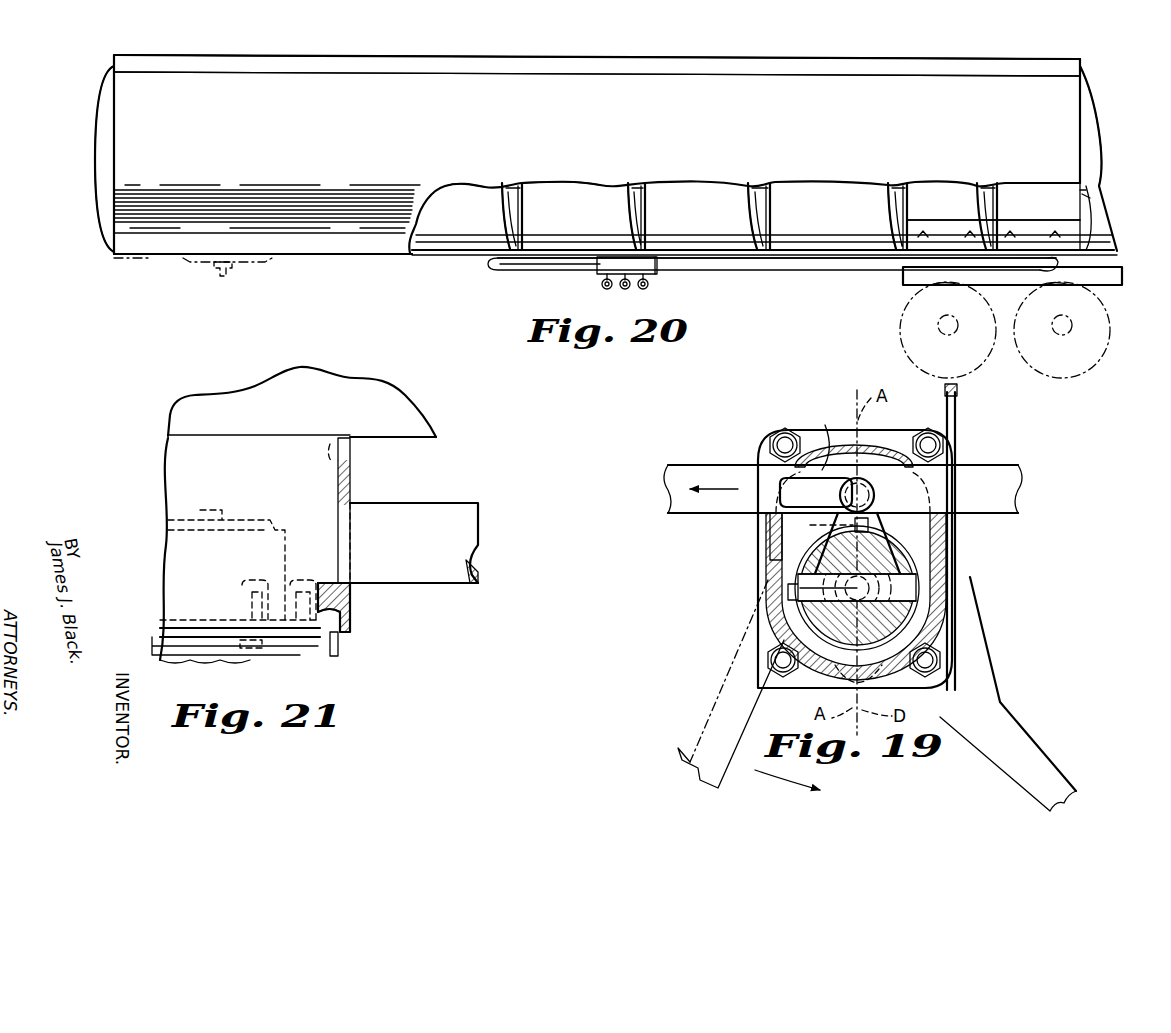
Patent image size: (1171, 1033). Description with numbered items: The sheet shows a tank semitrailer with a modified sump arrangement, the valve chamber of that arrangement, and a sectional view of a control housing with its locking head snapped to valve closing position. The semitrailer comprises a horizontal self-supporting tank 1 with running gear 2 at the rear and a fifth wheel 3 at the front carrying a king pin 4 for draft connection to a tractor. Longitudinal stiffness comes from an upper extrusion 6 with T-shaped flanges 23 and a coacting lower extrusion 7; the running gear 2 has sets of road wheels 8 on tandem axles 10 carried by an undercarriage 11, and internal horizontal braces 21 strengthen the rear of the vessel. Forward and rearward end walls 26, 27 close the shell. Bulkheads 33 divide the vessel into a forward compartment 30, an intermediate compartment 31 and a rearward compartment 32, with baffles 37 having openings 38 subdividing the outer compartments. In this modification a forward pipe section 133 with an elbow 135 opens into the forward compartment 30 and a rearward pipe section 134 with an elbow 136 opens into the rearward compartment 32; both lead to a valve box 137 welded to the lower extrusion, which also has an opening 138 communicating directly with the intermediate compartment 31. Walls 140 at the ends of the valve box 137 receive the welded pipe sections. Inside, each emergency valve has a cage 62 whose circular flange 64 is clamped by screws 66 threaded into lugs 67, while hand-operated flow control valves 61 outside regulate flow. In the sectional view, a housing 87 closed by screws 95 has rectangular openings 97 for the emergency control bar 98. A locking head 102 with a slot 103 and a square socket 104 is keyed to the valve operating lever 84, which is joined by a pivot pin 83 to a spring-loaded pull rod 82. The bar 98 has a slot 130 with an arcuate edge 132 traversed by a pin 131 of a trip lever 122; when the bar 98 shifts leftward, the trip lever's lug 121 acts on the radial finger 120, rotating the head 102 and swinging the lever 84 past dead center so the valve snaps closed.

In FIG. 20, the tank 1 is at (458, 98).
In FIG. 20, the running gear 2 is at (905, 344).
In FIG. 20, the fifth wheel 3 is at (185, 272).
In FIG. 20, the king pin 4 is at (222, 276).
In FIG. 20, the upper extrusion 6 is at (314, 60).
In FIG. 20, the lower extrusion 7 is at (342, 251).
In FIG. 20, the road wheels 8 is at (900, 330).
In FIG. 20, the tandem axles 10 is at (948, 336).
In FIG. 20, the undercarriage 11 is at (1103, 287).
In FIG. 20, the internal horizontal braces 21 is at (955, 230).
In FIG. 20, the flanges 23 is at (655, 66).
In FIG. 20, the forward end wall 26 is at (104, 114).
In FIG. 20, the rearward end wall 27 is at (1092, 118).
In FIG. 20, the forward compartment 30 is at (472, 192).
In FIG. 20, the intermediate compartment 31 is at (573, 186).
In FIG. 20, the rearward compartment 32 is at (1032, 200).
In FIG. 20, the bulkheads 33 is at (500, 200).
In FIG. 20, the baffles 37 is at (890, 214).
In FIG. 20, the opening 38 is at (748, 190).
In FIG. 20, the flow control valves 61 is at (652, 280).
In FIG. 21, the cage 62 is at (290, 545).
In FIG. 21, the circular flange 64 is at (276, 648).
In FIG. 21, the screws 66 is at (258, 588).
In FIG. 21, the lugs 67 is at (240, 591).
In FIG. 19, the pull rod 82 is at (958, 402).
In FIG. 19, the pivot pin 83 is at (966, 608).
In FIG. 19, the valve operating lever 84 is at (694, 752).
In FIG. 19, the housing 87 is at (754, 540).
In FIG. 19, the screws 95 is at (785, 433).
In FIG. 19, the rectangular openings 97 is at (958, 518).
In FIG. 19, the emergency control bar 98 is at (683, 482).
In FIG. 19, the locking head 102 is at (895, 620).
In FIG. 19, the slot 103 is at (908, 590).
In FIG. 19, the square socket 104 is at (790, 602).
In FIG. 19, the radial finger 120 is at (752, 593).
In FIG. 19, the lug 121 is at (898, 522).
In FIG. 19, the trip lever 122 is at (930, 548).
In FIG. 19, the slot 130 is at (800, 494).
In FIG. 19, the pin 131 is at (872, 478).
In FIG. 19, the arc 132 is at (822, 475).
In FIG. 20, the forward pipe section 133 is at (548, 268).
In FIG. 20, the rearward pipe section 134 is at (824, 266).
In FIG. 21, the rearward pipe section 134 is at (420, 565).
In FIG. 20, the elbow 135 is at (497, 260).
In FIG. 20, the elbow 136 is at (1062, 266).
In FIG. 20, the valve box 137 is at (606, 250).
In FIG. 21, the valve box 137 is at (195, 468).
In FIG. 20, the opening 138 is at (630, 236).
In FIG. 20, the walls 140 is at (668, 256).
In FIG. 21, the walls 140 is at (352, 478).